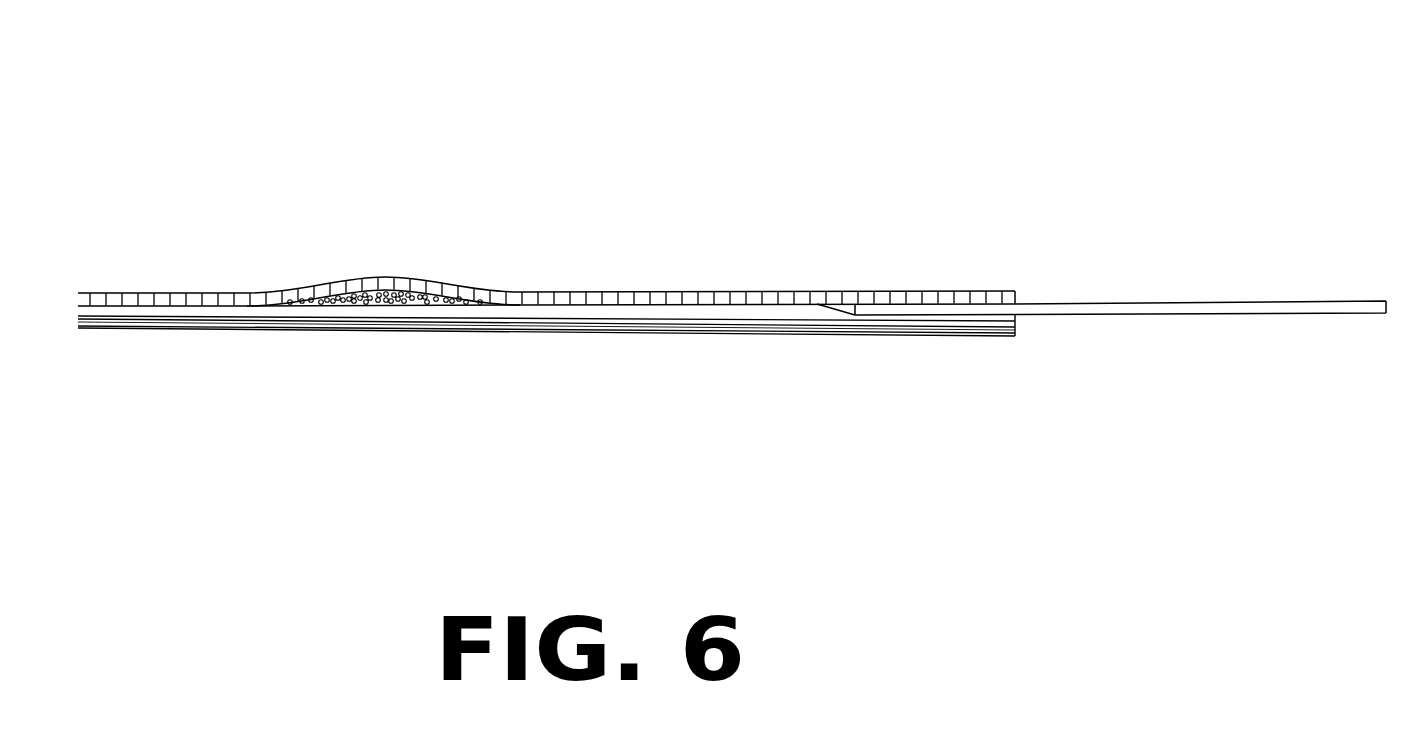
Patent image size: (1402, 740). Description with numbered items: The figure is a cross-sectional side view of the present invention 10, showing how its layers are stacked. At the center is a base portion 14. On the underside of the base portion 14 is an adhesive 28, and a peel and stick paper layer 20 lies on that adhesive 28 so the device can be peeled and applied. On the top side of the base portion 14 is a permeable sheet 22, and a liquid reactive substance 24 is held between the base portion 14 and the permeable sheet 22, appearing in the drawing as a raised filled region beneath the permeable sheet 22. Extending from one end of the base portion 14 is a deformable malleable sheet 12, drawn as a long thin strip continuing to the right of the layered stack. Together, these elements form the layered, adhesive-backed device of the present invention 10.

The present invention 10 is at (780, 138).
The deformable malleable sheet 12 is at (1232, 310).
The base portion 14 is at (782, 312).
The peel and stick paper layer 20 is at (418, 328).
The permeable sheet 22 is at (685, 293).
The liquid reactive substance 24 is at (380, 297).
The adhesive 28 is at (668, 331).